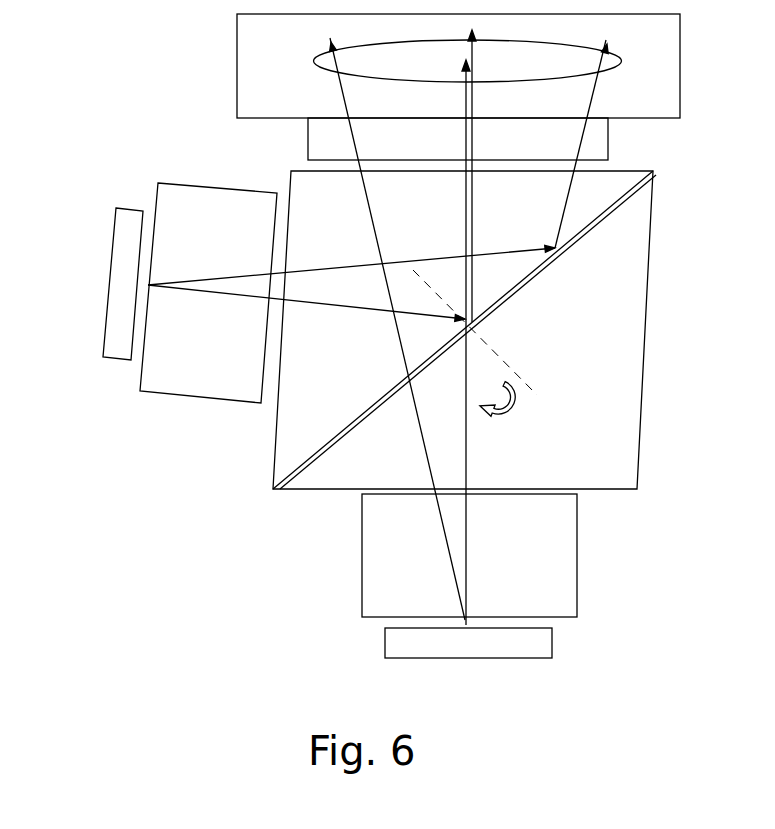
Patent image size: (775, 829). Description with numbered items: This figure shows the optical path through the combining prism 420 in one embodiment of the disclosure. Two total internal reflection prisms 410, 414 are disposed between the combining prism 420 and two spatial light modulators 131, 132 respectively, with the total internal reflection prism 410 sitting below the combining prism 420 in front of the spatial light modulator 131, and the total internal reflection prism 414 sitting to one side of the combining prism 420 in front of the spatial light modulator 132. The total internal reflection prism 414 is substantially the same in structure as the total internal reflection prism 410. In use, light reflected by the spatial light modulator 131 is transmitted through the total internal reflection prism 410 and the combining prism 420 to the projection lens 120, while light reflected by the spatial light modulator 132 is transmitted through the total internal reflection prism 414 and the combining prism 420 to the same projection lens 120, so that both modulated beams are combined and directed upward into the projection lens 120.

The projection lens 120 is at (612, 62).
The spatial light modulator 131 is at (542, 642).
The spatial light modulator 132 is at (120, 267).
The total internal reflection prism 410 is at (563, 555).
The total internal reflection prism 414 is at (157, 197).
The combining prism 420 is at (628, 323).